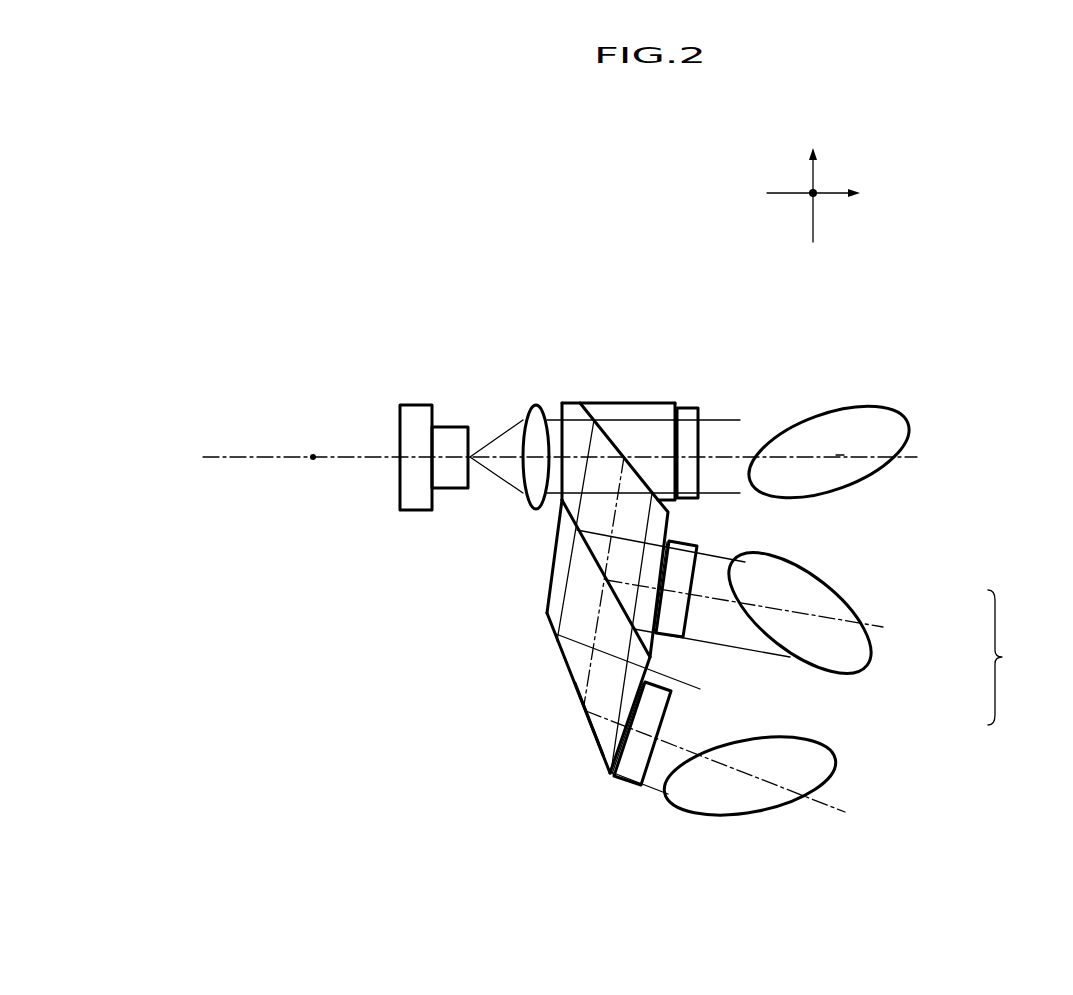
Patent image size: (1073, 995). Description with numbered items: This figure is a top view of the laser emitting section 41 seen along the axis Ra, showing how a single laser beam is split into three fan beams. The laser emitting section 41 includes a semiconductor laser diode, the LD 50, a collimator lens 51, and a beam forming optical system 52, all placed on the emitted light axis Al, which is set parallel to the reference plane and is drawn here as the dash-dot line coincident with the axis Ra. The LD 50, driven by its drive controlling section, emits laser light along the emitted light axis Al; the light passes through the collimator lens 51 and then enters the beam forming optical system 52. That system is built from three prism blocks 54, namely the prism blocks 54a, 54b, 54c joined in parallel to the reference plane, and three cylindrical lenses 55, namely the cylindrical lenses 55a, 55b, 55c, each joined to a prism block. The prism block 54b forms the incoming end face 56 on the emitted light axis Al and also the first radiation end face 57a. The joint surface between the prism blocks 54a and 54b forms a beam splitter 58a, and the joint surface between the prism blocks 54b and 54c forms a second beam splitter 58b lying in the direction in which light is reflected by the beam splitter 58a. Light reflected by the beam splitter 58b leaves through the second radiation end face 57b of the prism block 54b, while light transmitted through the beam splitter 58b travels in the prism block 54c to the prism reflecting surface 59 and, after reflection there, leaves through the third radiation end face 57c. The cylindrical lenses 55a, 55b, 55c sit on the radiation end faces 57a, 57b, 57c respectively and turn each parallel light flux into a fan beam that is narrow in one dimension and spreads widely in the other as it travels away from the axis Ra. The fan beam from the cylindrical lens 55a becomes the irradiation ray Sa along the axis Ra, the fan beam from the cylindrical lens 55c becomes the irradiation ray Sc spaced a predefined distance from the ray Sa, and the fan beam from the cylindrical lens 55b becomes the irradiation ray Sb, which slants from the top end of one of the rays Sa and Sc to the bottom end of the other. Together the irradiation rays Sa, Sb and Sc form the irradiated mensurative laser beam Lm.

The laser emitting section 41 is at (471, 215).
The LD 50 is at (418, 403).
The collimator lens 51 is at (537, 396).
The beam forming optical system 52 is at (593, 172).
The prism block 54 is at (625, 352).
The cylindrical lens 55 is at (697, 362).
The incoming end face 56 is at (557, 420).
The prism block 54a is at (660, 403).
The prism block 54b is at (588, 403).
The prism block 54c is at (577, 628).
The cylindrical lens 55a is at (693, 440).
The cylindrical lens 55b is at (683, 580).
The cylindrical lens 55c is at (660, 723).
The first radiation end face 57a is at (687, 467).
The second radiation end face 57b is at (662, 603).
The third radiation end face 57c is at (612, 785).
The beam splitter 58a is at (604, 428).
The beam splitter 58b is at (590, 558).
The prism reflecting surface 59 is at (588, 714).
The axis Ra is at (313, 458).
The emitted light axis Al is at (840, 455).
The irradiation ray Sa is at (872, 474).
The irradiation ray Sb is at (870, 655).
The irradiation ray Sc is at (833, 752).
The irradiated mensurative laser beam Lm is at (1012, 657).